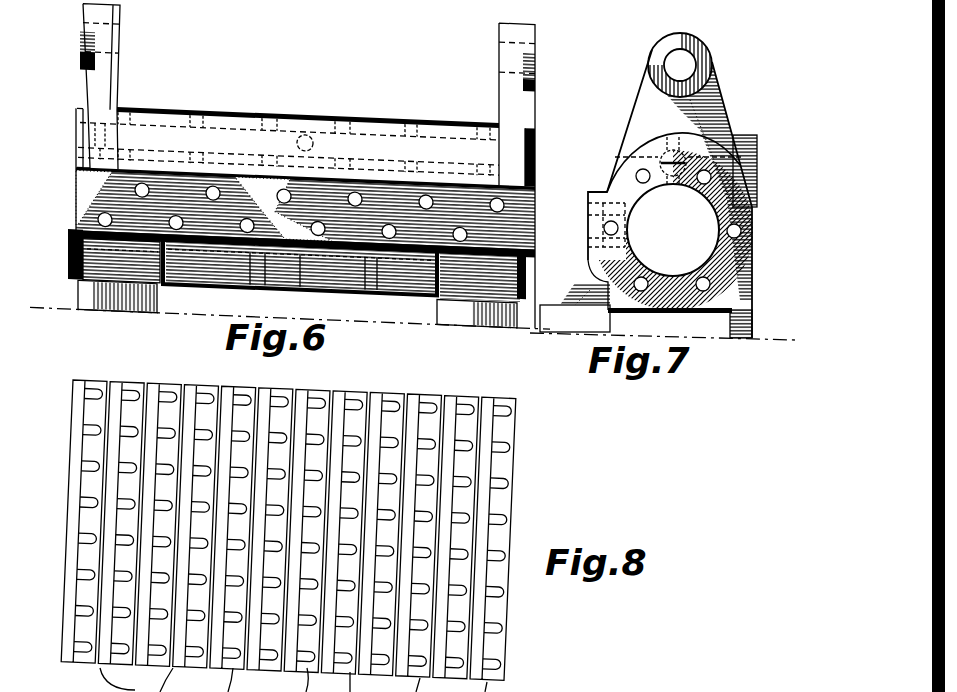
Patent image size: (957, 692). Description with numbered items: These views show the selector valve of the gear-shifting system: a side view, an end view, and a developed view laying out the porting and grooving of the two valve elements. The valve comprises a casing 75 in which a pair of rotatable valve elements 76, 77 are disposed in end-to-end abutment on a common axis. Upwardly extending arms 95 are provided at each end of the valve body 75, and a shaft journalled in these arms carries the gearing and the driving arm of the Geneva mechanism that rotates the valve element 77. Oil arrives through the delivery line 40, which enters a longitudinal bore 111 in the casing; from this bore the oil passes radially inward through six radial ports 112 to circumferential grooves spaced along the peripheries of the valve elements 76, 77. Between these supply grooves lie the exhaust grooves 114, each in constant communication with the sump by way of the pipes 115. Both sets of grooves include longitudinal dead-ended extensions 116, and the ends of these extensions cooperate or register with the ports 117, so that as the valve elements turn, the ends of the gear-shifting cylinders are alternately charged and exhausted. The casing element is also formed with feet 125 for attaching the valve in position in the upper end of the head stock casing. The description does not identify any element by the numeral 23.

In FIG. 7, the shaft 23 is at (750, 181).
In FIG. 6, the pipe 40 is at (312, 113).
In FIG. 7, the pipe 40 is at (742, 148).
In FIG. 6, the casing 75 is at (410, 89).
In FIG. 8, the valve element 76 is at (457, 402).
In FIG. 8, the valve element 77 is at (173, 406).
In FIG. 6, the upwardly extending arms 95 is at (106, 64).
In FIG. 7, the upwardly extending arms 95 is at (716, 109).
In FIG. 6, the longitudinal bore 111 is at (434, 117).
In FIG. 7, the longitudinal bore 111 is at (662, 142).
In FIG. 6, the radial ports 112 is at (347, 155).
In FIG. 7, the radial ports 112 is at (677, 182).
In FIG. 8, the circumferential grooves 114 is at (189, 680).
In FIG. 6, the pipes 115 is at (354, 289).
In FIG. 7, the pipes 115 is at (669, 279).
In FIG. 8, the pipes 115 is at (396, 680).
In FIG. 8, the longitudinal dead-ended extensions 116 is at (158, 388).
In FIG. 6, the ports 117 is at (100, 216).
In FIG. 7, the ports 117 is at (468, 237).
In FIG. 6, the feet 125 is at (95, 294).
In FIG. 7, the feet 125 is at (561, 305).